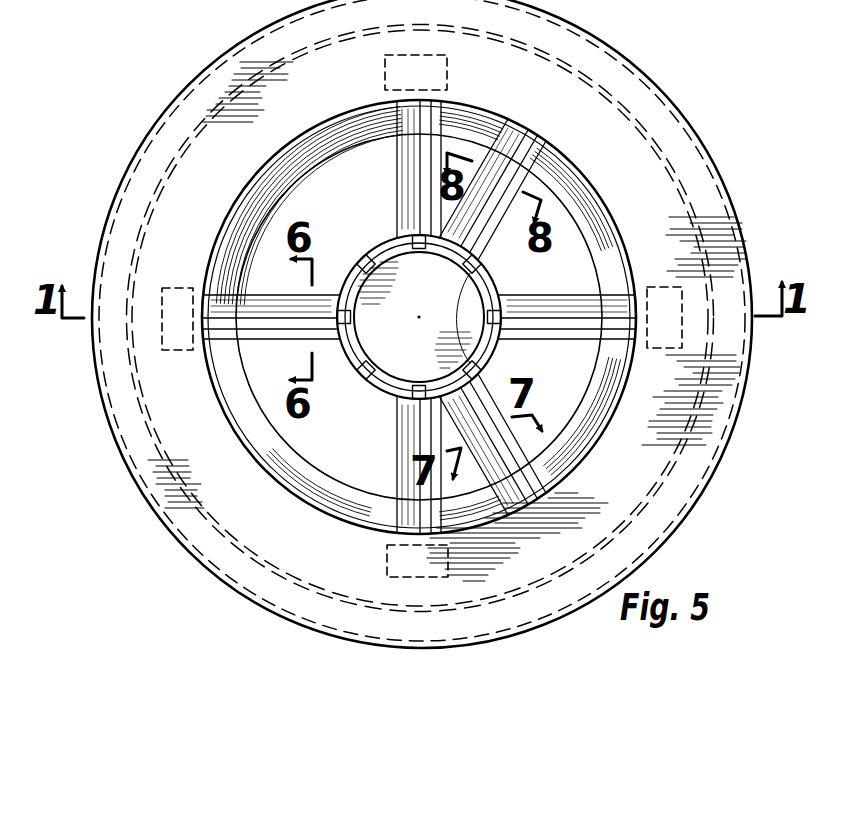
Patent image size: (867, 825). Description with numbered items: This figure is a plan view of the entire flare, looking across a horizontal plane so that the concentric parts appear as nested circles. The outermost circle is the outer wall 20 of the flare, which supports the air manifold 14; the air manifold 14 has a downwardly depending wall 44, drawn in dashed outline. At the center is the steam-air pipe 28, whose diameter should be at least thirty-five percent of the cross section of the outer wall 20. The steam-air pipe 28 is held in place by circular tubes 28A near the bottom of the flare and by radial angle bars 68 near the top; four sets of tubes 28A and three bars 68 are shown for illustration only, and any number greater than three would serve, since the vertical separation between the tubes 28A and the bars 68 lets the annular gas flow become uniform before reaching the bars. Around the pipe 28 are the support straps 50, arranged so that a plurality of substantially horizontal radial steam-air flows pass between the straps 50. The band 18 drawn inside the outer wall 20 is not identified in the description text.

The air manifold 14 is at (634, 64).
The downwardly depending wall 44 is at (290, 578).
The outer wall 20 is at (478, 106).
The ring band 18 is at (597, 254).
The radial angle bars 68 is at (548, 164).
The steam-air pipe 28 is at (348, 272).
The support straps 50 is at (345, 316).
The circular tubes 28A is at (400, 210).